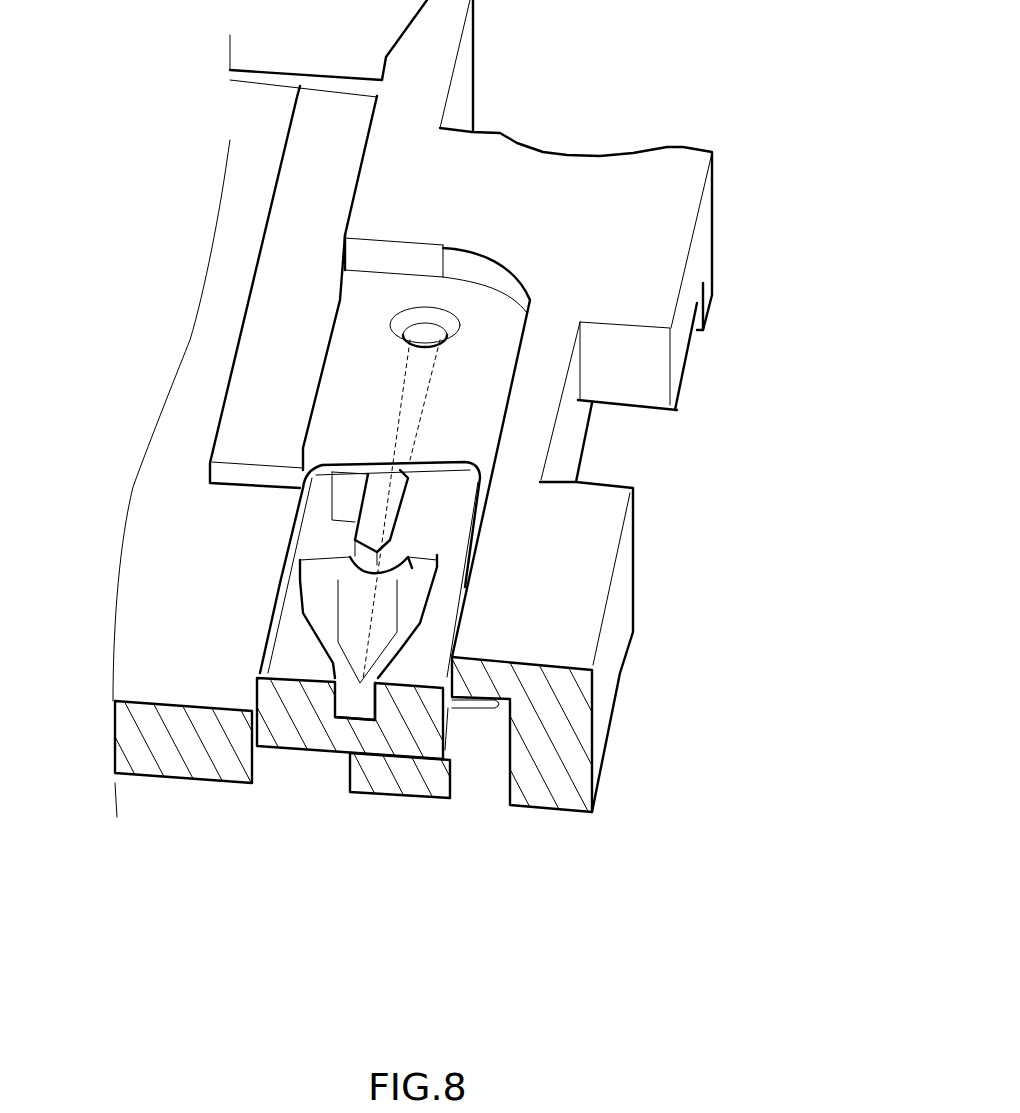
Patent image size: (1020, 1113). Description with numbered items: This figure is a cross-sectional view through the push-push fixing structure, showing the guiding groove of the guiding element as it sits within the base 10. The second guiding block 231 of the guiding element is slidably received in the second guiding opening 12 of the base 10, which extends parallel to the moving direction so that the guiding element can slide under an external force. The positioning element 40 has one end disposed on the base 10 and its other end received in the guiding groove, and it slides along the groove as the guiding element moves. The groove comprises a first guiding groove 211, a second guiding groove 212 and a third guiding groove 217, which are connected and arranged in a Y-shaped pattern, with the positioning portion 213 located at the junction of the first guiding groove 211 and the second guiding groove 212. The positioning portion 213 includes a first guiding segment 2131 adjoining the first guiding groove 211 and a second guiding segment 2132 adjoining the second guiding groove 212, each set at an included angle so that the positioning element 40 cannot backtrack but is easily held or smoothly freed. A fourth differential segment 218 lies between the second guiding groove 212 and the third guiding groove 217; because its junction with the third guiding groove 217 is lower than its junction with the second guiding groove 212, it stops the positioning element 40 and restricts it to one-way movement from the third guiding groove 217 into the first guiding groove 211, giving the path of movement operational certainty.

The base 10 is at (570, 275).
The second guiding opening 12 is at (225, 783).
The positioning element 40 is at (400, 470).
The first guiding groove 211 is at (407, 637).
The second guiding groove 212 is at (330, 585).
The positioning portion 213 is at (380, 617).
The first guiding segment 2131 is at (380, 580).
The second guiding segment 2132 is at (430, 555).
The third guiding groove 217 is at (360, 710).
The fourth differential segment 218 is at (337, 717).
The second guiding block 231 is at (297, 727).